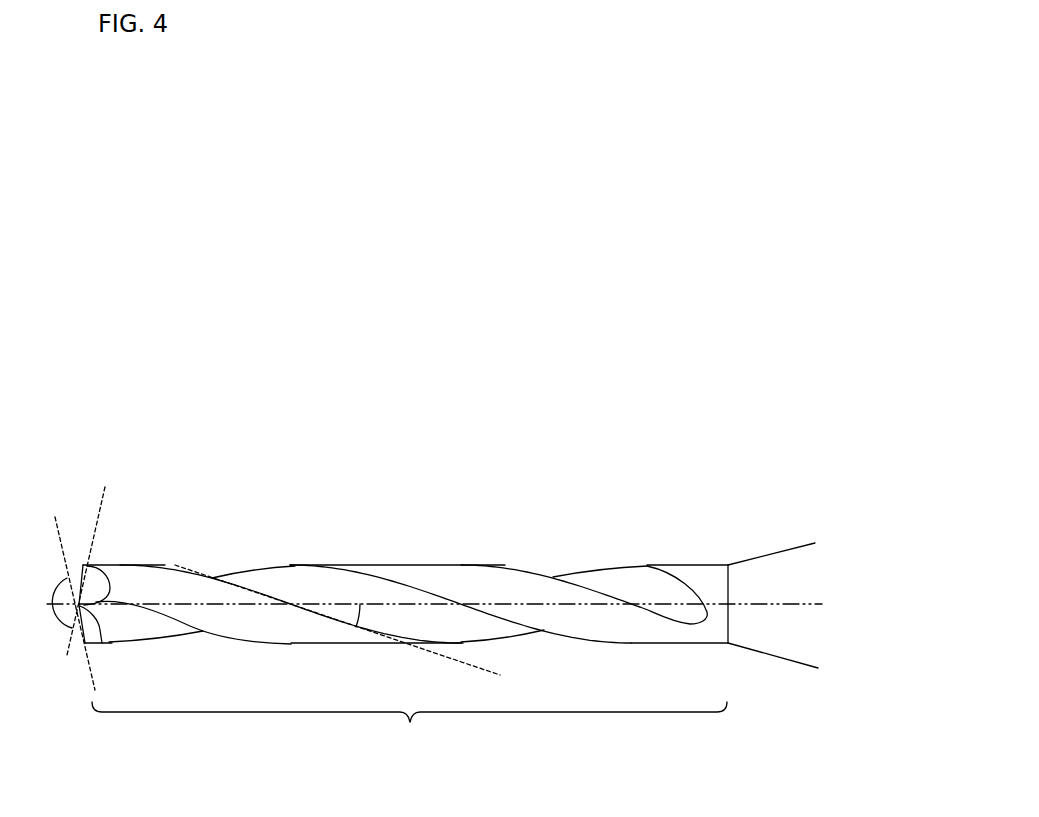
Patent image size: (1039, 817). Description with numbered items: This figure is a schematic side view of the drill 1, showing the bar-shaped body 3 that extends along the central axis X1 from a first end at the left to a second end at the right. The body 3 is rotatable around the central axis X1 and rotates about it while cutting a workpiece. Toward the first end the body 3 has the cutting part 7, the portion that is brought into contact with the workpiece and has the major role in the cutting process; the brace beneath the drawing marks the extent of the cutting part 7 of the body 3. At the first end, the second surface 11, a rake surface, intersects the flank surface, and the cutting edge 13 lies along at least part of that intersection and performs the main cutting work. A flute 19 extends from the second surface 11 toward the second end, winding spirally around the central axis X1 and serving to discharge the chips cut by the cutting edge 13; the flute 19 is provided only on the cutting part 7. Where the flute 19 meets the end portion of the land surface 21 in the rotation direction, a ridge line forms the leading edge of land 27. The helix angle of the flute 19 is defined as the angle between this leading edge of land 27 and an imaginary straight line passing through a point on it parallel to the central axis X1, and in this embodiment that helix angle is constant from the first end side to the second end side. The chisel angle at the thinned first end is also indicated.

The drill 1 is at (621, 534).
The body 3 is at (409, 729).
The cutting part 7 is at (409, 712).
The second surface 11 is at (83, 647).
The cutting edge 13 is at (80, 558).
The flute 19 is at (349, 578).
The land surface 21 is at (480, 578).
The leading edge of land 27 is at (283, 598).
The central axis X1 is at (434, 588).